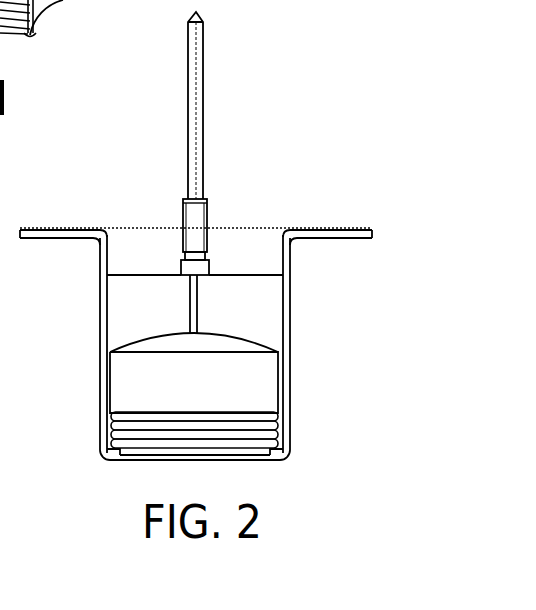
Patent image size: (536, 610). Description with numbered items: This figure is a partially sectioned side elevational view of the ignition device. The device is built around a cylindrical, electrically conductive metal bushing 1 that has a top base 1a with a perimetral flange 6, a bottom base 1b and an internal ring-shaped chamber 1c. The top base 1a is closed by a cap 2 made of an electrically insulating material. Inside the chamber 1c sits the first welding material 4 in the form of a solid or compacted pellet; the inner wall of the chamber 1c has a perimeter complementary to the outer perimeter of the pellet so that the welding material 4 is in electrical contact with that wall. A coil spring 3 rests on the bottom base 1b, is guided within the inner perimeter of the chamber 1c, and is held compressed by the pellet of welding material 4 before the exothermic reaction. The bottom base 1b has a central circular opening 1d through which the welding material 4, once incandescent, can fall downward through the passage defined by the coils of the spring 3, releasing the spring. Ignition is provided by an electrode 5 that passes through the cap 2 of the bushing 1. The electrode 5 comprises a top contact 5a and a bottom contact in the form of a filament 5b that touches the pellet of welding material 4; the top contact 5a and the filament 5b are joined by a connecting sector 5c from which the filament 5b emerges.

The metal bushing 1 is at (286, 345).
The top base 1a is at (295, 236).
The bottom base 1b is at (30, 33).
The internal ring-shaped chamber 1c is at (145, 296).
The central circular opening 1d is at (152, 466).
The cap 2 is at (250, 247).
The coil spring 3 is at (108, 414).
The first welding material 4 is at (235, 380).
The electrode 5 is at (239, 173).
The top contact 5a is at (198, 80).
The filament 5b is at (196, 312).
The connecting sector 5c is at (197, 228).
The perimetral flange 6 is at (48, 231).